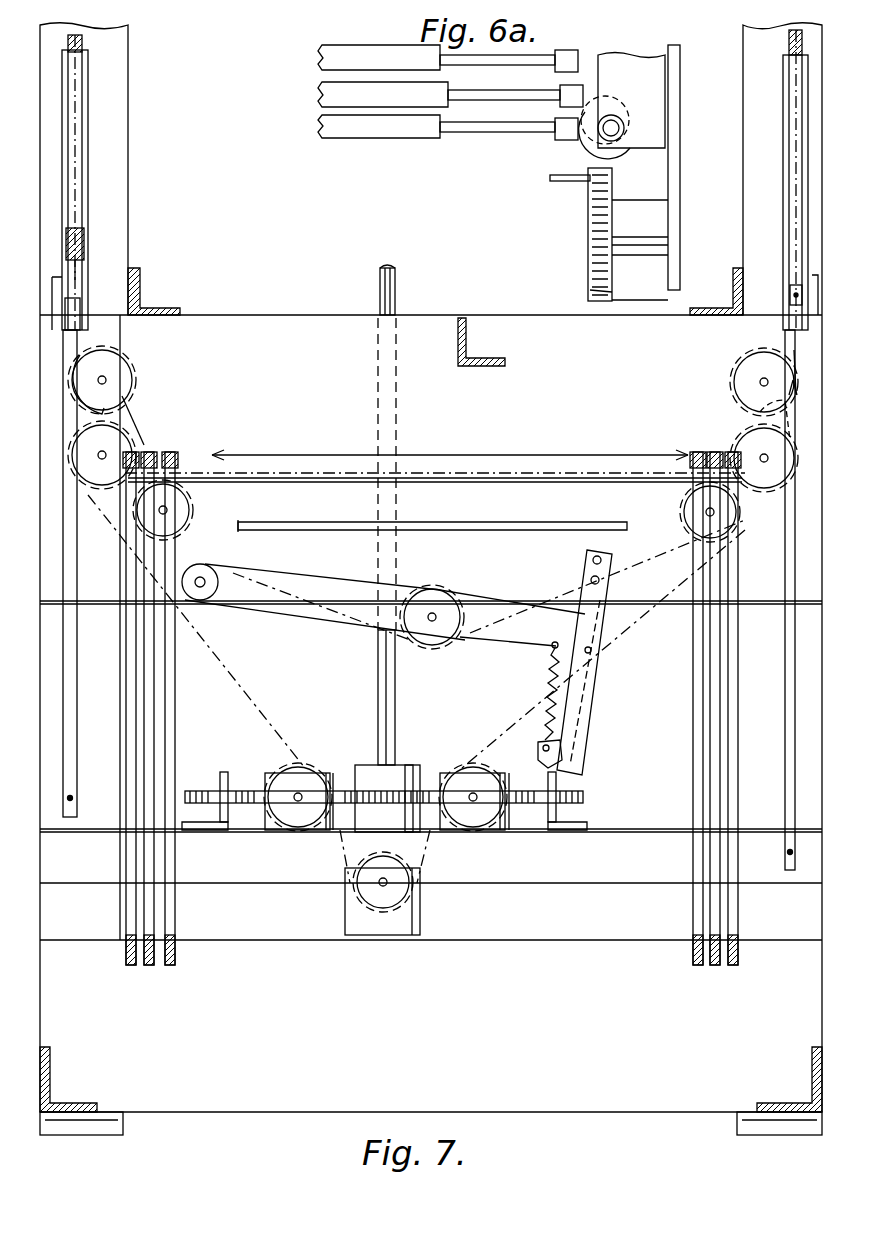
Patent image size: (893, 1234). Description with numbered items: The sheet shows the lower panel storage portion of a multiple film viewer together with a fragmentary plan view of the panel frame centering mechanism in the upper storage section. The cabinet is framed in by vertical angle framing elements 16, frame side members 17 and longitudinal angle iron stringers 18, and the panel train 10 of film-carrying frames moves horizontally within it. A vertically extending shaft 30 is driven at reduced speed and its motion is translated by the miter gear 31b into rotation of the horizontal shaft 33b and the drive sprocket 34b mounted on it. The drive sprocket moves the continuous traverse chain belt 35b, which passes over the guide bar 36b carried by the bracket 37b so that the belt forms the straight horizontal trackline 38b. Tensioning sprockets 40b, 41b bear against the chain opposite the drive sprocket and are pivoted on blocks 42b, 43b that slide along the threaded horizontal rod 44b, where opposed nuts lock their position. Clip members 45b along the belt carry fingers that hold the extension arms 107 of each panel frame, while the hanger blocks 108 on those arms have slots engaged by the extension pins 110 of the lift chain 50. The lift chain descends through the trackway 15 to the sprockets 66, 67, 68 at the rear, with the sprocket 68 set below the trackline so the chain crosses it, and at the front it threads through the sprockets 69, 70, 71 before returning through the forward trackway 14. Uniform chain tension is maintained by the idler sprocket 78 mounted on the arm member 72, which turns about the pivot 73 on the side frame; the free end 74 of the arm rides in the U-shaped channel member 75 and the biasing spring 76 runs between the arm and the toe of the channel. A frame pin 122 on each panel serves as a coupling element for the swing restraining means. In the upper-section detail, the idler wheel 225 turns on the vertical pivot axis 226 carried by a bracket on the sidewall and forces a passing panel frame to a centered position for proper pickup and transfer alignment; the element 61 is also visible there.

In FIG. 7, the panel train 10 is at (360, 455).
In FIG. 7, the panel transfer trackway 14 is at (808, 176).
In FIG. 7, the panel transfer trackway 15 is at (62, 204).
In FIG. 7, the vertical angle framing element 16 is at (130, 140).
In FIG. 6A, the frame side member 17 is at (681, 76).
In FIG. 7, the frame side member 17 is at (272, 312).
In FIG. 7, the longitudinal angle iron stringer 18 is at (141, 283).
In FIG. 7, the shaft 30 is at (396, 292).
In FIG. 7, the miter gear 31b is at (400, 762).
In FIG. 7, the shaft 33b is at (370, 890).
In FIG. 7, the drive sprocket 34b is at (395, 892).
In FIG. 7, the traverse chain belt 35b is at (633, 630).
In FIG. 7, the guide bar 36b is at (474, 528).
In FIG. 7, the bracket 37b is at (410, 530).
In FIG. 7, the horizontal trackline 38b is at (483, 470).
In FIG. 7, the sprocket 40b is at (287, 768).
In FIG. 7, the sprocket 41b is at (475, 768).
In FIG. 7, the block 42b is at (272, 834).
In FIG. 7, the block 43b is at (500, 834).
In FIG. 7, the threaded horizontal rod 44b is at (583, 795).
In FIG. 7, the clip member 45b is at (190, 455).
In FIG. 6A, the lift chain 50 is at (590, 292).
In FIG. 7, the lift chain 50 is at (62, 268).
In FIG. 6A, the gear 61 is at (586, 252).
In FIG. 7, the sprocket 66 is at (135, 375).
In FIG. 7, the sprocket 67 is at (122, 435).
In FIG. 7, the sprocket 68 is at (195, 505).
In FIG. 7, the sprocket 69 is at (688, 513).
In FIG. 7, the sprocket 70 is at (792, 458).
In FIG. 7, the sprocket 71 is at (742, 382).
In FIG. 7, the arm member 72 is at (530, 648).
In FIG. 7, the pivot 73 is at (205, 590).
In FIG. 7, the free end 74 is at (590, 650).
In FIG. 7, the U-shaped channel member 75 is at (580, 718).
In FIG. 7, the biasing spring 76 is at (546, 686).
In FIG. 7, the idler sprocket 78 is at (437, 649).
In FIG. 6A, the extension arm 107 is at (510, 100).
In FIG. 6A, the hanger block 108 is at (565, 48).
In FIG. 7, the hanger block 108 is at (150, 452).
In FIG. 6A, the extension pin 110 is at (565, 182).
In FIG. 7, the extension pin 110 is at (800, 392).
In FIG. 7, the frame pin 122 is at (72, 797).
In FIG. 6A, the idler wheel 225 is at (612, 98).
In FIG. 6A, the vertical pivot axis 226 is at (620, 126).